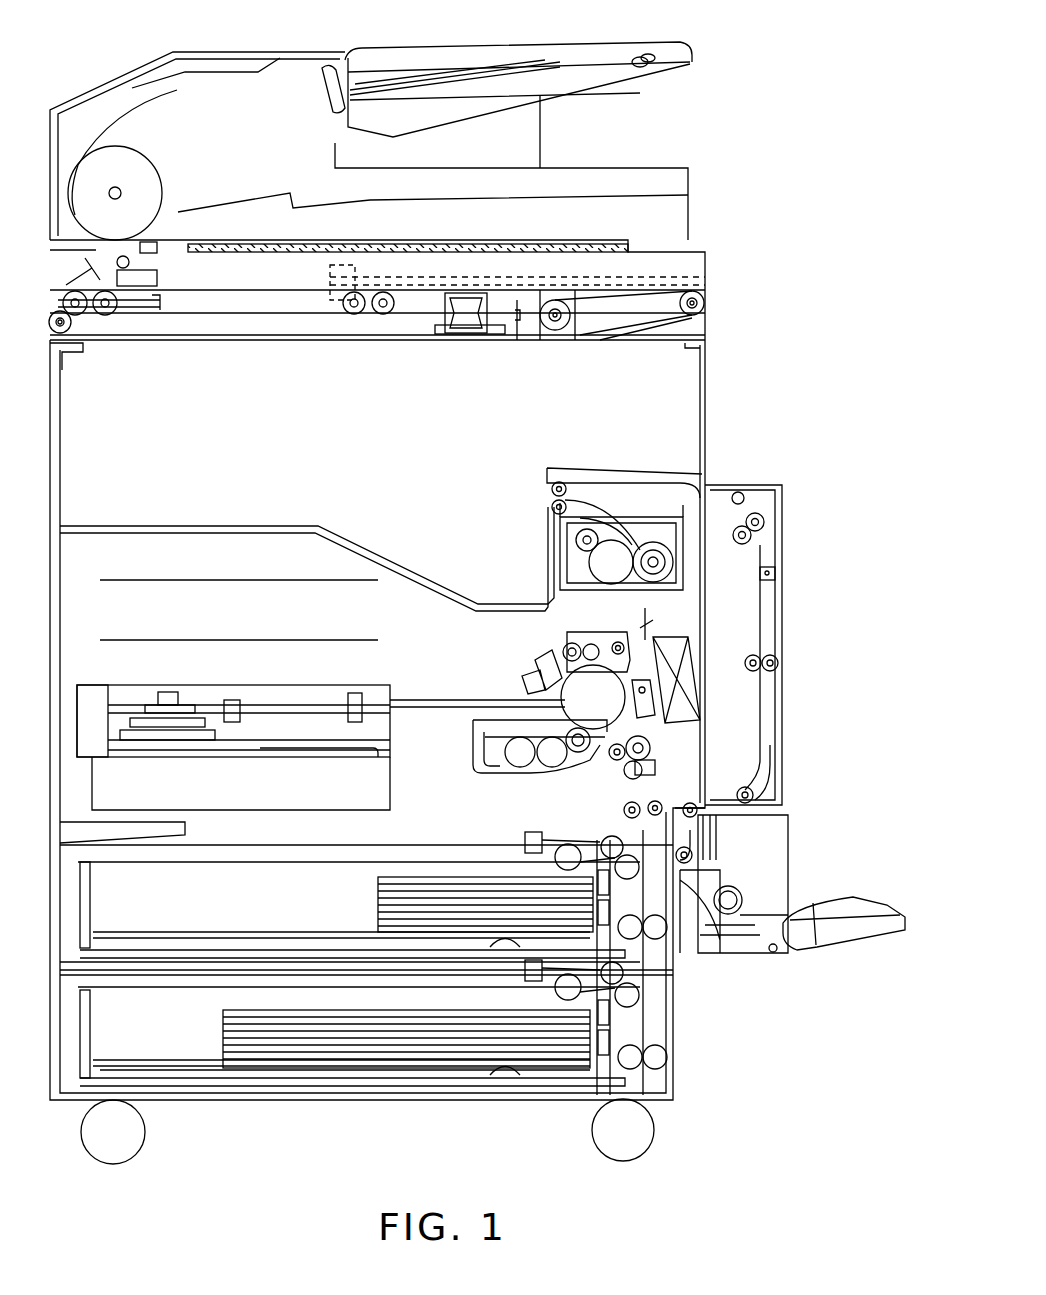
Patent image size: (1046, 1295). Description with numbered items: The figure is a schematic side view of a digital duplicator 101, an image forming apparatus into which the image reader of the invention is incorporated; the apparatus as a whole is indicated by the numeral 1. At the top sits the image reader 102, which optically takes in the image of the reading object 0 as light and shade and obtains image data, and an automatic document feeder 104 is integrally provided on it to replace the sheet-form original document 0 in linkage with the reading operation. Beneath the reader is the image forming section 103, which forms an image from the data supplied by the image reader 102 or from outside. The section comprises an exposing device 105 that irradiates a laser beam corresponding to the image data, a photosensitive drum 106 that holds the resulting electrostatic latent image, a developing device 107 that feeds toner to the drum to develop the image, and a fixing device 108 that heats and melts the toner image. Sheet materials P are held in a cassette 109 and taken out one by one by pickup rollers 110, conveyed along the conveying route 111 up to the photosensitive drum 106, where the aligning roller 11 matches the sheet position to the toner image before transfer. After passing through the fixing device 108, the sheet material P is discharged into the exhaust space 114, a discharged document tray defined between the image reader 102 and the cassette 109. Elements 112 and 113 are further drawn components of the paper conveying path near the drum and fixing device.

The image forming apparatus 1 is at (723, 118).
The original document 0 is at (512, 65).
The aligning roller 11 is at (292, 244).
The digital duplicator 101 is at (668, 430).
The image reader 102 is at (195, 293).
The image forming section 103 is at (790, 481).
The automatic document feeder 104 is at (165, 108).
The exposing device 105 is at (183, 695).
The photosensitive drum 106 is at (640, 667).
The developing device 107 is at (546, 762).
The fixing device 108 is at (600, 525).
The cassette 109 is at (352, 872).
The pickup rollers 110 is at (568, 844).
The conveying route 111 is at (690, 834).
The registration roller 112 is at (618, 762).
The discharge roller pair 113 is at (552, 489).
The exhaust space 114 is at (260, 523).
The sheet material P is at (463, 890).